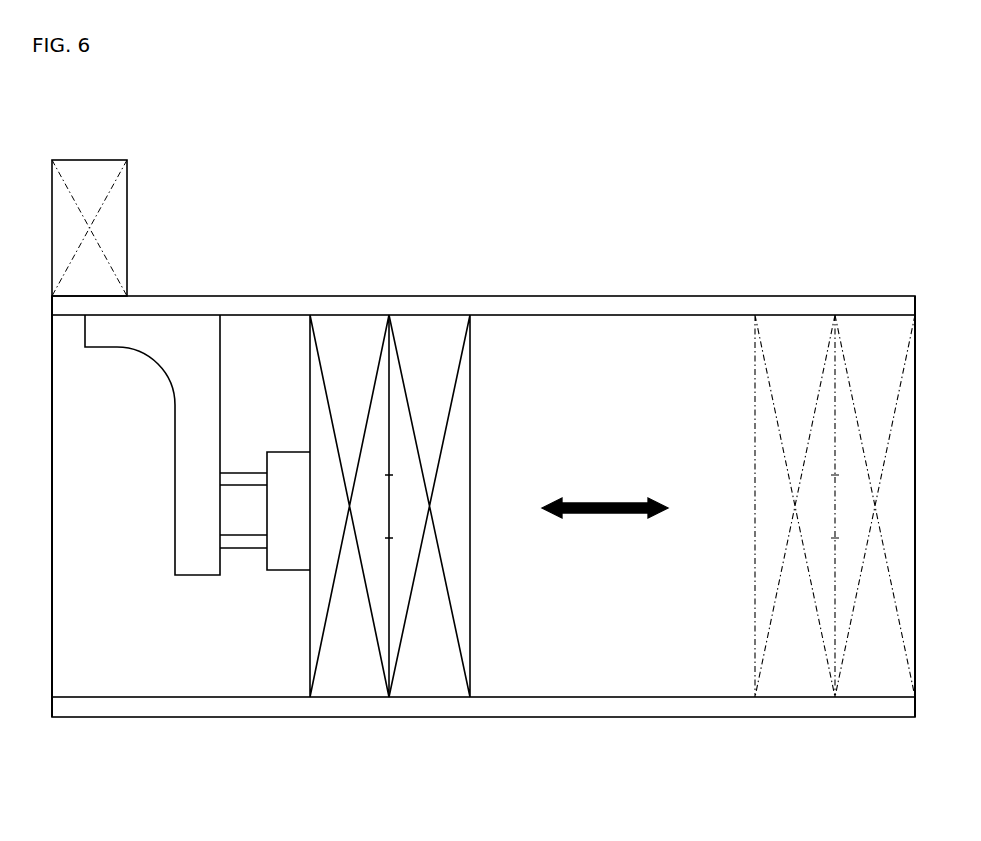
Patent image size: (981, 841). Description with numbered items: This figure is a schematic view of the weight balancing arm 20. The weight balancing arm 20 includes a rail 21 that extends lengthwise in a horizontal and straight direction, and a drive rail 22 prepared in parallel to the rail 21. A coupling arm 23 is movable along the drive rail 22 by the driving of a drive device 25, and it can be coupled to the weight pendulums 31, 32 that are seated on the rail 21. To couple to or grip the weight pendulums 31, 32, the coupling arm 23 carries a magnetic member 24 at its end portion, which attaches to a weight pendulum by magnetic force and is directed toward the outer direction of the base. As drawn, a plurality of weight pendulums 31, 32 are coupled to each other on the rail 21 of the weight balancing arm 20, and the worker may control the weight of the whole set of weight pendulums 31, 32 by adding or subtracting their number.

The weight balancing arm 20 is at (700, 178).
The rail 21 is at (730, 309).
The drive rail 22 is at (483, 506).
The coupling arm 23 is at (193, 559).
The magnetic member 24 is at (288, 560).
The drive device 25 is at (122, 222).
The weight pendulum 31 is at (352, 687).
The weight pendulum 32 is at (430, 680).